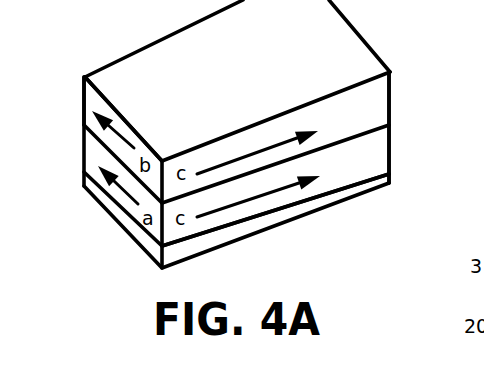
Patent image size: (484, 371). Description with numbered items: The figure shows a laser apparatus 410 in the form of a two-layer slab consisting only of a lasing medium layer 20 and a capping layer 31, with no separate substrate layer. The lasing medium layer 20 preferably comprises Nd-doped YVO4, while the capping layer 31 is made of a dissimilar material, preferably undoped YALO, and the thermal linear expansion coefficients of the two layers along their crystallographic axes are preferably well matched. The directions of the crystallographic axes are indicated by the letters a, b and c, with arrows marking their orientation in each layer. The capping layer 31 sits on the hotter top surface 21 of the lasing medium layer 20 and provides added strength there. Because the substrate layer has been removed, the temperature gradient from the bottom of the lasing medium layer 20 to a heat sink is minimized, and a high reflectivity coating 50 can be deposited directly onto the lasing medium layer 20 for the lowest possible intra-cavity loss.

The lasing medium layer 20 is at (90, 162).
The top surface 21 is at (403, 122).
The capping layer 31 is at (87, 103).
The high reflectivity coating 50 is at (296, 209).
The laser apparatus 410 is at (116, 245).